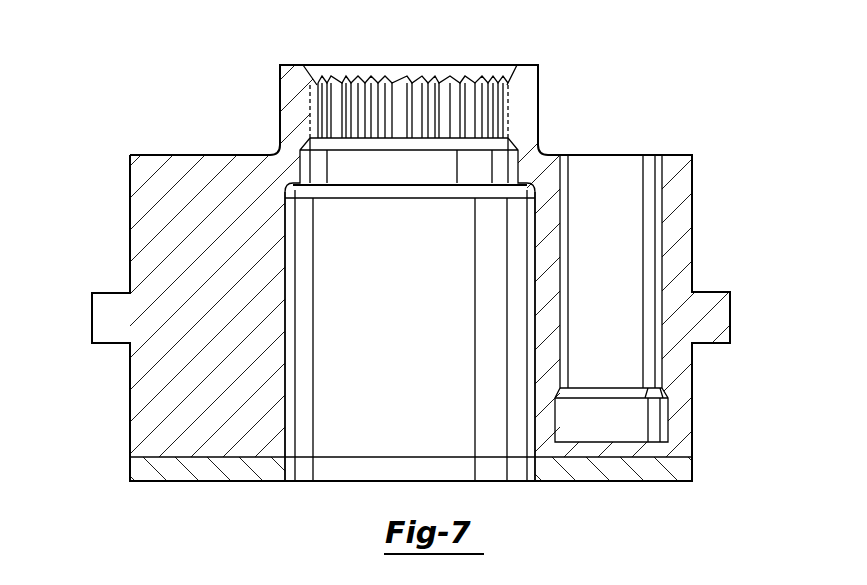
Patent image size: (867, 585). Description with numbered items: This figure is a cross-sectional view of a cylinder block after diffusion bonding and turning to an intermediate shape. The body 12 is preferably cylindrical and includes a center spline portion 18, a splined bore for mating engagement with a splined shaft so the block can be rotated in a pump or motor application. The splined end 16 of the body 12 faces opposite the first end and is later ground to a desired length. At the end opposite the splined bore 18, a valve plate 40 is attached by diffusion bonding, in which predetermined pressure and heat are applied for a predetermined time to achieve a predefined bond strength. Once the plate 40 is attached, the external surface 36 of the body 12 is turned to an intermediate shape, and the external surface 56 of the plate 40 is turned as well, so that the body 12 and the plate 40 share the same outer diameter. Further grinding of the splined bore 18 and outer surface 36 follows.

The body 12 is at (142, 237).
The second end 16 is at (220, 155).
The center spline portion 18 is at (316, 99).
The external surface 36 is at (692, 198).
The valve plate 40 is at (585, 468).
The external surface 56 is at (693, 468).